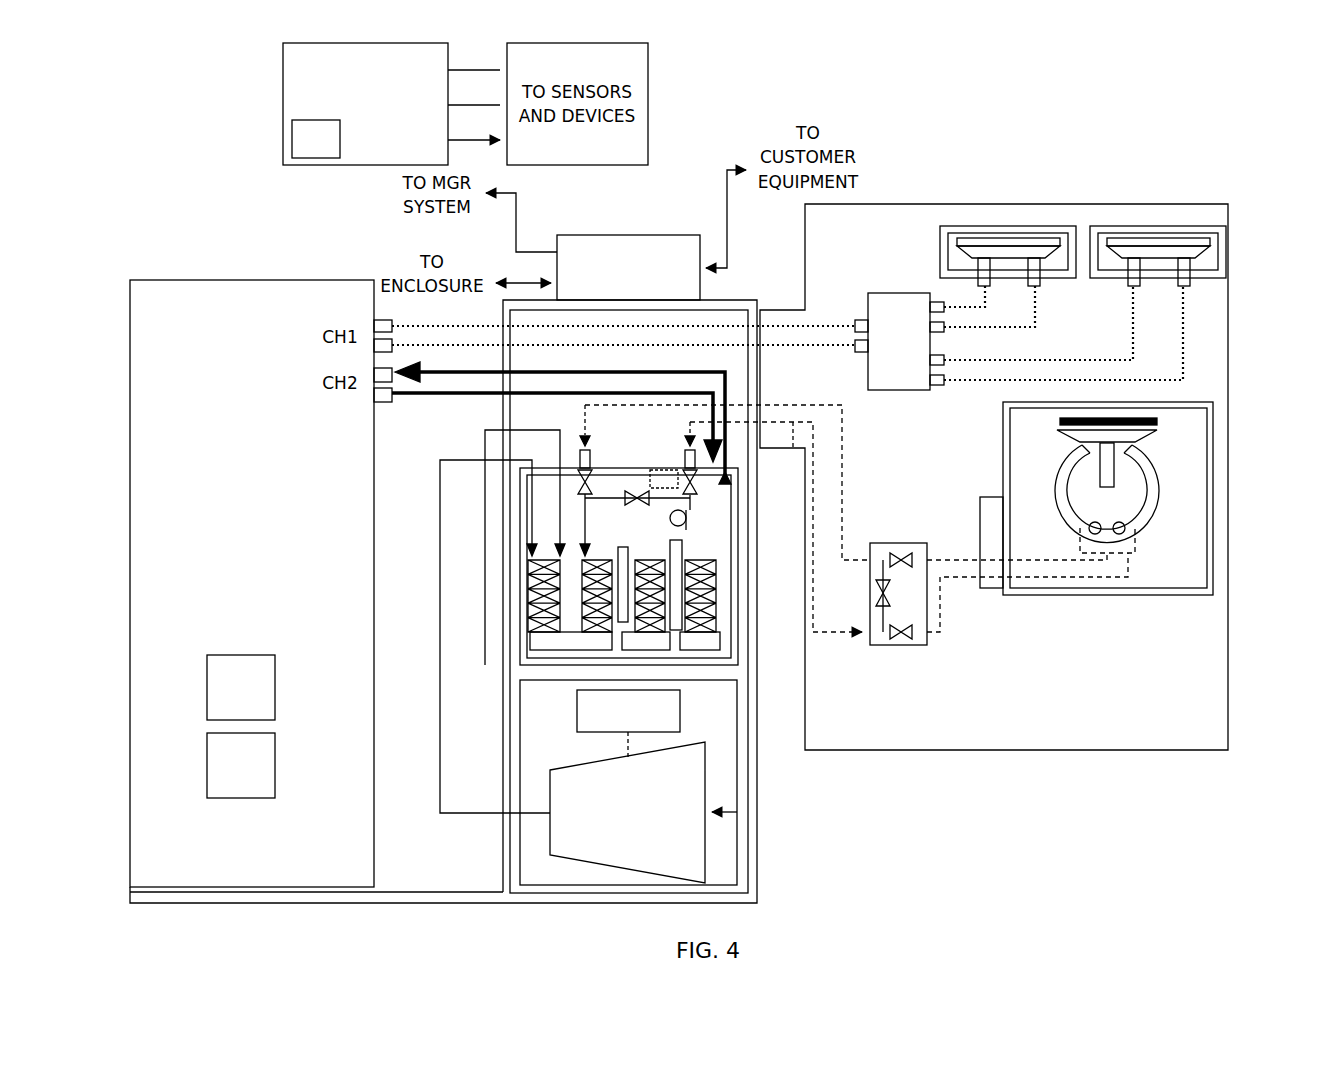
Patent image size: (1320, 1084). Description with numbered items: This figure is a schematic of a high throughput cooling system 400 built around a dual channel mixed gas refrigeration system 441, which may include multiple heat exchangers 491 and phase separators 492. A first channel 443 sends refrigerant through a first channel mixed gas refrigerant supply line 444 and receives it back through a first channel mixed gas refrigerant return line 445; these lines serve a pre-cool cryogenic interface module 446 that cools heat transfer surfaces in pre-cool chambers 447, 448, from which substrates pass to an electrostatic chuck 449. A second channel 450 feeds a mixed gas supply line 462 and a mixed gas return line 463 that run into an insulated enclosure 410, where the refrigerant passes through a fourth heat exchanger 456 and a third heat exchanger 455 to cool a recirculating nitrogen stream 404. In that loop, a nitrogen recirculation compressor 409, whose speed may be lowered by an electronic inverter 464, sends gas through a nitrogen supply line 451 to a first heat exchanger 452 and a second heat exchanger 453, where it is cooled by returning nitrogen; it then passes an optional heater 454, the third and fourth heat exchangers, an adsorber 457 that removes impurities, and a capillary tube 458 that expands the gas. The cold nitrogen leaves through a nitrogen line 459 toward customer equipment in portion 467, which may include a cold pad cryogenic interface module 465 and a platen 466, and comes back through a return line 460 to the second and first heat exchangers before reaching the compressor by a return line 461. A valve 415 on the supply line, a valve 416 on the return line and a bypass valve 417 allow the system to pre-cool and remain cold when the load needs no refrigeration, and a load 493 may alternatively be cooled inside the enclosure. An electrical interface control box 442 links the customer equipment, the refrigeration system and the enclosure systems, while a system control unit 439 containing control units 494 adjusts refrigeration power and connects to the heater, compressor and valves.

The high throughput cooling system 400 is at (784, 826).
The nitrogen stream 404 is at (440, 590).
The nitrogen recirculation compressor 409 is at (705, 866).
The insulated enclosure 410 is at (740, 625).
The valve 415 is at (686, 475).
The valve 416 is at (578, 478).
The bypass valve 417 is at (632, 492).
The system control unit 439 is at (283, 107).
The mixed gas refrigeration system 441 is at (187, 280).
The electrical interface control box 442 is at (640, 235).
The first channel 443 is at (376, 345).
The first channel mixed gas refrigerant supply line 444 is at (456, 350).
The first channel mixed gas refrigerant return line 445 is at (444, 326).
The pre-cool cryogenic interface module 446 is at (884, 354).
The pre-cool chamber 447 is at (1053, 226).
The pre-cool chamber 448 is at (1200, 226).
The electrostatic chuck 449 is at (1160, 440).
The second channel 450 is at (376, 395).
The nitrogen supply line 451 is at (440, 765).
The first heat exchanger 452 is at (545, 555).
The second heat exchanger 453 is at (623, 547).
The heater 454 is at (670, 520).
The third heat exchanger 455 is at (645, 640).
The fourth heat exchanger 456 is at (700, 560).
The adsorber 457 is at (690, 542).
The capillary tube 458 is at (690, 512).
The nitrogen line 459 is at (797, 458).
The return line 460 is at (845, 462).
The return line 461 is at (500, 678).
The mixed gas supply line 462 is at (460, 393).
The mixed gas return line 463 is at (660, 372).
The electronic inverter 464 is at (577, 712).
The cold pad cryogenic interface module 465 is at (920, 645).
The platen 466 is at (1158, 508).
The customer equipment portion 467 is at (1168, 750).
The heat exchangers 491 is at (219, 676).
The phase separators 492 is at (219, 754).
The load 493 is at (664, 469).
The control units 494 is at (302, 151).